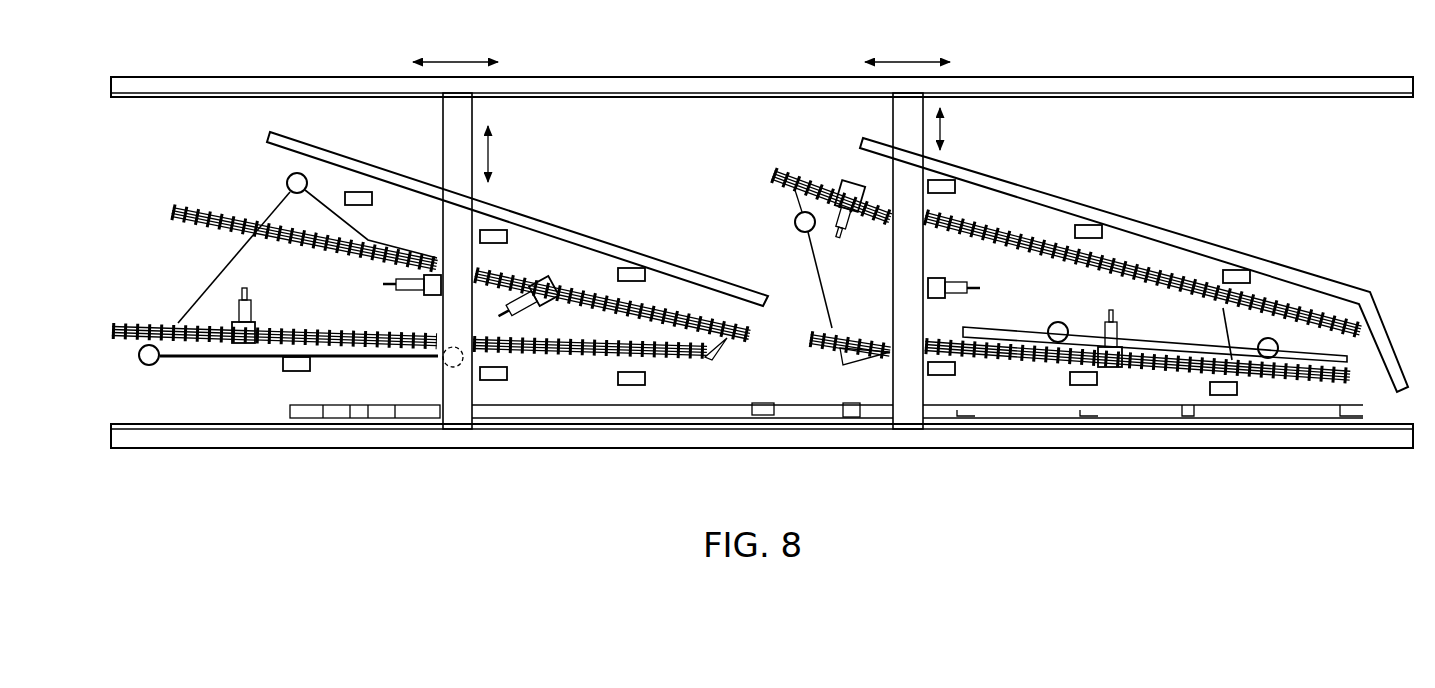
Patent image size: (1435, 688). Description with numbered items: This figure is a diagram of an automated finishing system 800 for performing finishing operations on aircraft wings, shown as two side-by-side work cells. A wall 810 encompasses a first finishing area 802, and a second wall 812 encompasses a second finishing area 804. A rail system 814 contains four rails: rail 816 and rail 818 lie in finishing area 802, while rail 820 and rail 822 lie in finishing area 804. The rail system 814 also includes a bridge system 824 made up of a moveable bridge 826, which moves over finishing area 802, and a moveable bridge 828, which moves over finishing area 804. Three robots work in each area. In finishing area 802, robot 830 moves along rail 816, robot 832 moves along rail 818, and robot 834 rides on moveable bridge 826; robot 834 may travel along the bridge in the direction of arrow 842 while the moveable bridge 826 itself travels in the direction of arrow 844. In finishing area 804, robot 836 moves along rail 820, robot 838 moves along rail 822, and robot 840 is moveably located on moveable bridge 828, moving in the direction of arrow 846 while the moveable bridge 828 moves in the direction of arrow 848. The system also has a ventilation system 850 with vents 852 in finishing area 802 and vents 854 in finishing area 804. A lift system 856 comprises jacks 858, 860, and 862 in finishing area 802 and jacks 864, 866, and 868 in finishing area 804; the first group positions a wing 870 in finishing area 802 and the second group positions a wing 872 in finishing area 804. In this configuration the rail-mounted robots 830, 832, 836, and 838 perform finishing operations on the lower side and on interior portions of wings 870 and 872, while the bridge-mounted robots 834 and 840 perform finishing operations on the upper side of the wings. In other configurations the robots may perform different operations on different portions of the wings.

The automated finishing system 800 is at (1189, 462).
The finishing area 802 is at (682, 388).
The finishing area 804 is at (1143, 388).
The wall 810 is at (620, 247).
The wall 812 is at (1218, 250).
The rail system 814 is at (249, 205).
The rail 816 is at (180, 210).
The rail 818 is at (118, 320).
The rail 820 is at (775, 170).
The rail 822 is at (822, 333).
The bridge system 824 is at (780, 166).
The moveable bridge 826 is at (453, 440).
The moveable bridge 828 is at (913, 440).
The robot 830 is at (546, 282).
The robot 832 is at (238, 312).
The robot 834 is at (396, 288).
The robot 836 is at (848, 183).
The robot 838 is at (1108, 330).
The robot 840 is at (962, 283).
The arrow 842 is at (490, 152).
The arrow 844 is at (452, 62).
The arrow 846 is at (942, 130).
The arrow 848 is at (948, 62).
The ventilation system 850 is at (268, 365).
The vents 852 is at (293, 372).
The vents 854 is at (1210, 388).
The lift system 856 is at (280, 171).
The jack 858 is at (285, 185).
The jack 860 is at (140, 362).
The jack 862 is at (445, 362).
The jack 864 is at (795, 224).
The jack 866 is at (1047, 327).
The jack 868 is at (1258, 345).
The wing 870 is at (238, 252).
The wing 872 is at (830, 257).